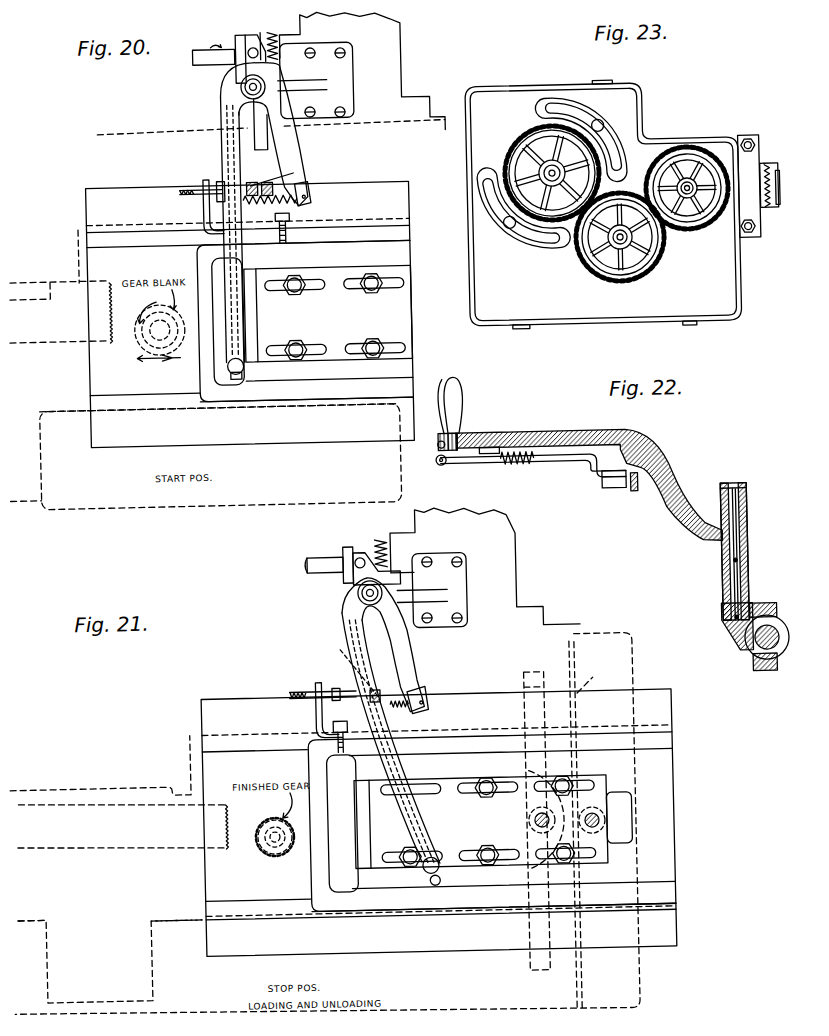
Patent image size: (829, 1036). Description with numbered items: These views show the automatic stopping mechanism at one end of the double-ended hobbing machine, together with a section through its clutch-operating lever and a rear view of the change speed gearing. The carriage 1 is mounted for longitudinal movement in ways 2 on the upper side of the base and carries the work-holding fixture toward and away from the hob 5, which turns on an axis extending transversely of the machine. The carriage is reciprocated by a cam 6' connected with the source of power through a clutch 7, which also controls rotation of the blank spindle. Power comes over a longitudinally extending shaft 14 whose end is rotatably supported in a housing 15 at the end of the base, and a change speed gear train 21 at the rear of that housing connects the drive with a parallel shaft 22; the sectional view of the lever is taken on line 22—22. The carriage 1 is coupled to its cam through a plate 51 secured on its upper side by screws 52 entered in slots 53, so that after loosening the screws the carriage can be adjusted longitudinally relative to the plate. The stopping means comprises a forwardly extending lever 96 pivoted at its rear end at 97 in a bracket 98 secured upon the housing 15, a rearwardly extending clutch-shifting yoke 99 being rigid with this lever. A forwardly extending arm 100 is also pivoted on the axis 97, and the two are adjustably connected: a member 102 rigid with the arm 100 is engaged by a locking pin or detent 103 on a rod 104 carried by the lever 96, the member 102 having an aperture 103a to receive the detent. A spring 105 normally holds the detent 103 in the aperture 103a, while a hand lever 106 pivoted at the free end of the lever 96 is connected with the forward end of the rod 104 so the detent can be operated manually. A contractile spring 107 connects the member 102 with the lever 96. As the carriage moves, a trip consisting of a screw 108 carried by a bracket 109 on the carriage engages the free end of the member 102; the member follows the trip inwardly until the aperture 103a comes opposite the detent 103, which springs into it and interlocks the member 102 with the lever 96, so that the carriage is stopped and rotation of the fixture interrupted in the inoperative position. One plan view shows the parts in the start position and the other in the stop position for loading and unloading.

In FIG. 20, the carriage 1 is at (397, 378).
In FIG. 21, the carriage 1 is at (666, 811).
In FIG. 20, the ways 2 is at (130, 392).
In FIG. 21, the ways 2 is at (259, 897).
In FIG. 21, the hob 5 is at (108, 842).
In FIG. 21, the cam 6' is at (323, 826).
In FIG. 20, the clutch 7 is at (268, 33).
In FIG. 23, the clutch 7 is at (771, 164).
In FIG. 21, the clutch 7 is at (383, 542).
In FIG. 20, the longitudinally extending shaft 14 is at (194, 64).
In FIG. 22, the longitudinally extending shaft 14 is at (762, 648).
In FIG. 21, the longitudinally extending shaft 14 is at (313, 563).
In FIG. 20, the housing 15 is at (373, 38).
In FIG. 23, the housing 15 is at (647, 116).
In FIG. 21, the housing 15 is at (484, 566).
In FIG. 23, the change speed gear train 21 is at (579, 229).
In FIG. 20, the shaft 22 is at (257, 48).
In FIG. 20, the plate 51 is at (396, 308).
In FIG. 21, the plate 51 is at (493, 821).
In FIG. 21, the screws 52 is at (486, 869).
In FIG. 20, the slots 53 is at (311, 290).
In FIG. 21, the slots 53 is at (487, 798).
In FIG. 20, the lever 96 is at (233, 132).
In FIG. 22, the lever 96 is at (627, 441).
In FIG. 21, the lever 96 is at (360, 665).
In FIG. 20, the pivot 97 is at (248, 87).
In FIG. 22, the pivot 97 is at (736, 488).
In FIG. 21, the pivot 97 is at (362, 592).
In FIG. 20, the bracket 98 is at (322, 72).
In FIG. 21, the bracket 98 is at (430, 581).
In FIG. 20, the clutch-shifting yoke 99 is at (253, 50).
In FIG. 22, the clutch-shifting yoke 99 is at (749, 648).
In FIG. 21, the clutch-shifting yoke 99 is at (365, 557).
In FIG. 20, the arm 100 is at (286, 111).
In FIG. 21, the arm 100 is at (400, 647).
In FIG. 20, the member 102 is at (284, 184).
In FIG. 22, the member 102 is at (636, 493).
In FIG. 21, the member 102 is at (402, 685).
In FIG. 22, the locking pin or detent 103 is at (606, 486).
In FIG. 20, the aperture 103a is at (292, 188).
In FIG. 21, the aperture 103a is at (338, 667).
In FIG. 22, the rod 104 is at (547, 461).
In FIG. 22, the spring 105 is at (520, 453).
In FIG. 20, the hand lever 106 is at (229, 380).
In FIG. 22, the hand lever 106 is at (446, 405).
In FIG. 21, the hand lever 106 is at (430, 886).
In FIG. 20, the contractile spring 107 is at (309, 200).
In FIG. 21, the contractile spring 107 is at (430, 706).
In FIG. 20, the screw 108 is at (196, 186).
In FIG. 21, the screw 108 is at (297, 690).
In FIG. 20, the bracket 109 is at (206, 209).
In FIG. 21, the bracket 109 is at (320, 714).